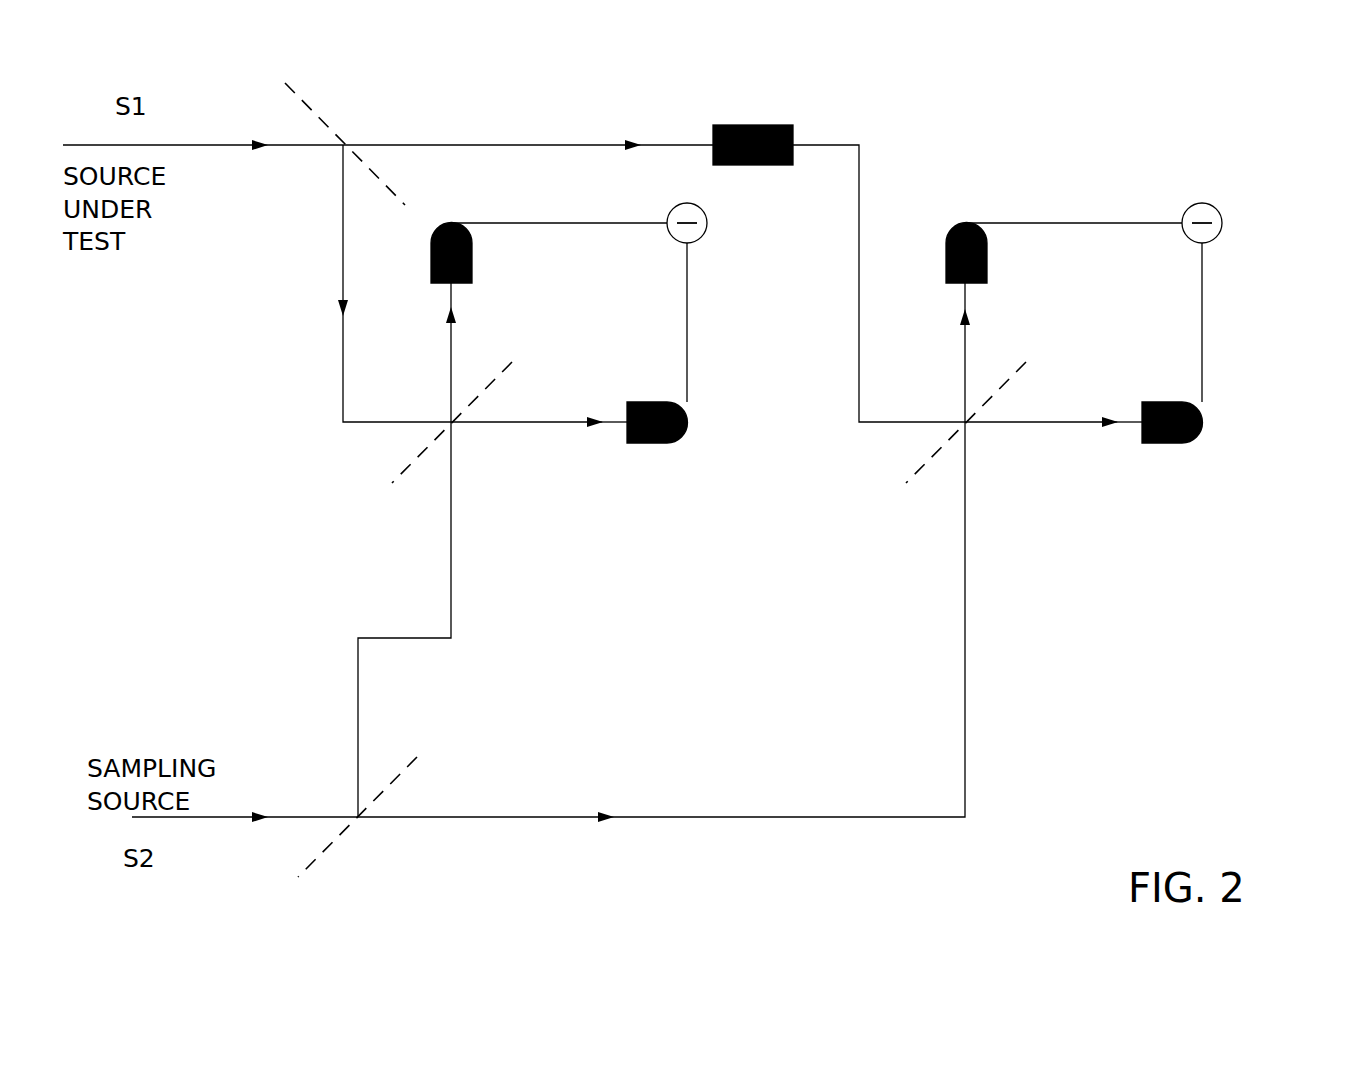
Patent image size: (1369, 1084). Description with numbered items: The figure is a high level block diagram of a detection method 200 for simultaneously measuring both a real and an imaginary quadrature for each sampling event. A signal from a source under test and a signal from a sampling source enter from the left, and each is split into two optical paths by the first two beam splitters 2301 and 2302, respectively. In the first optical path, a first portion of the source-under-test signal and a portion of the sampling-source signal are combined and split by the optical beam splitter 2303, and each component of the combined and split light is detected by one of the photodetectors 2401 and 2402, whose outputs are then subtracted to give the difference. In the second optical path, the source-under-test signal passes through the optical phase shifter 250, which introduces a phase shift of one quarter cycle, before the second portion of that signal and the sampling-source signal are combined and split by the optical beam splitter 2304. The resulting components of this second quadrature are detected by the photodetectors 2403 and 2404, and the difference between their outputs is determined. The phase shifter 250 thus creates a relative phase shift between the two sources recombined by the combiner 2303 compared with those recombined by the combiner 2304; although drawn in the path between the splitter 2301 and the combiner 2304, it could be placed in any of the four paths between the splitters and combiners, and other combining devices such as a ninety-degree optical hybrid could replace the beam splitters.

The detection method 200 is at (1346, 681).
The first optical beam splitter 2301 is at (317, 113).
The second optical beam splitter 2302 is at (332, 845).
The third optical beam splitter 2303 is at (420, 453).
The fourth optical beam splitter 2304 is at (930, 453).
The first photodetector 2401 is at (453, 222).
The second photodetector 2402 is at (685, 437).
The third photodetector 2403 is at (968, 222).
The fourth photodetector 2404 is at (1203, 437).
The optical phase shifter 250 is at (755, 125).